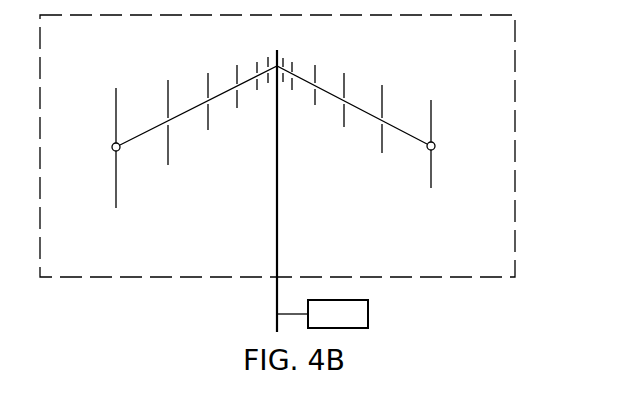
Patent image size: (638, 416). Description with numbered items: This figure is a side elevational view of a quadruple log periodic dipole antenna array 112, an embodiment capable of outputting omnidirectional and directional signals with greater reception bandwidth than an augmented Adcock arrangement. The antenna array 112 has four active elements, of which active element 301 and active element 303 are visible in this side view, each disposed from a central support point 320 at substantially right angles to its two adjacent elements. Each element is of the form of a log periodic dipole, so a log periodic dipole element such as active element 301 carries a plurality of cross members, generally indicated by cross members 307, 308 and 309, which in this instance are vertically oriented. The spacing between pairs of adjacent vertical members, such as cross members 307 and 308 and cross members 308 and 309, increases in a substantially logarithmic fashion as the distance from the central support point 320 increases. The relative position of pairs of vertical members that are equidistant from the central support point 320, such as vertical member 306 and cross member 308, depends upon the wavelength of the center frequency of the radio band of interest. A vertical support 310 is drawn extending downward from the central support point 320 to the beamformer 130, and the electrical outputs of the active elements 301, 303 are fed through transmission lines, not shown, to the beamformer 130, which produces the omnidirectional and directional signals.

The antenna array 112 is at (516, 65).
The active element 301 is at (432, 130).
The active element 303 is at (116, 98).
The vertical member 306 is at (208, 72).
The cross member 307 is at (316, 70).
The cross member 308 is at (345, 85).
The cross member 309 is at (383, 98).
The mast / support boom 310 is at (279, 232).
The central support point 320 is at (278, 60).
The beamformer 130 is at (357, 323).